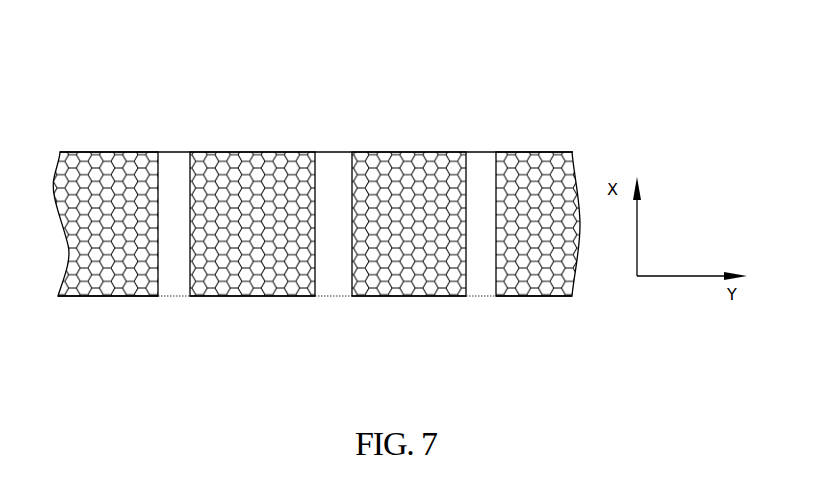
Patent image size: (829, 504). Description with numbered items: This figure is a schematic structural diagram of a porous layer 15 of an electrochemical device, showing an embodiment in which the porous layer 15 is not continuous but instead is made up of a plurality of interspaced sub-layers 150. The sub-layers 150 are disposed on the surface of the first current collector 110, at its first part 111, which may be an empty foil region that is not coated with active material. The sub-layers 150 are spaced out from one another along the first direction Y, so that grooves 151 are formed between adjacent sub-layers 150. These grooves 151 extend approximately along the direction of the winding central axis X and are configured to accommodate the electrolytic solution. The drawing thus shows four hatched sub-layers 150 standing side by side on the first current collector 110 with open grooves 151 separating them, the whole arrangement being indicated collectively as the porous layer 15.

The porous layer 15 is at (273, 61).
The sub-layers 150 is at (110, 202).
The grooves 151 is at (333, 283).
The first part 111 is at (417, 148).
The first current collector 110 is at (488, 298).